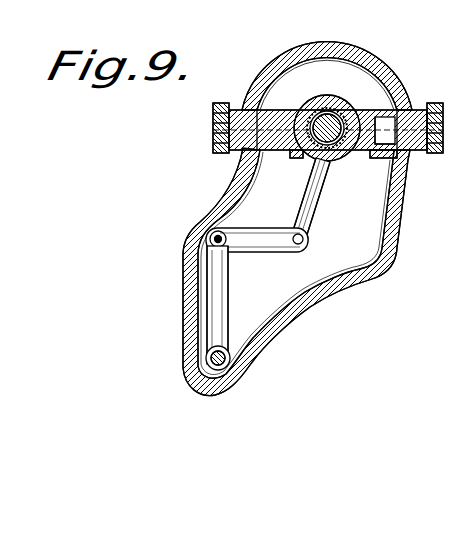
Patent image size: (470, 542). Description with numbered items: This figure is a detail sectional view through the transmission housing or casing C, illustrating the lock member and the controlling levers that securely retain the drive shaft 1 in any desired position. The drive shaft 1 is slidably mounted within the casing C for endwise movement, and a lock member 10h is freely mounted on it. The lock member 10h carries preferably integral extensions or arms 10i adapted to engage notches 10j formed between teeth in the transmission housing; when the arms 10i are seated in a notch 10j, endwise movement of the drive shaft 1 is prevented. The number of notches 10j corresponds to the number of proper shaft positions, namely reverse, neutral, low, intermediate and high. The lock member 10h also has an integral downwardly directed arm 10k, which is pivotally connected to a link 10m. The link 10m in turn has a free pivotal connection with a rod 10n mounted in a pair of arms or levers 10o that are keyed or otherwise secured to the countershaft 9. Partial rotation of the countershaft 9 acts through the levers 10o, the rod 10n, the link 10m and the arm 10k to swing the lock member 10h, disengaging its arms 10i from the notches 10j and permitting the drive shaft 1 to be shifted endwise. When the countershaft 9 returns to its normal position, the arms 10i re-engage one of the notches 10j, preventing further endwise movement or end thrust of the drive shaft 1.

The lock member 10h is at (331, 87).
The notches 10j is at (273, 108).
The extensions or arms 10i is at (409, 192).
The rod 10n is at (194, 223).
The downwardly directed arm 10k is at (311, 199).
The link 10m is at (257, 248).
The arms or levers 10o is at (222, 302).
The drive shaft 1 is at (356, 100).
The transmission housing or casing C is at (298, 235).
The countershaft 9 is at (214, 362).